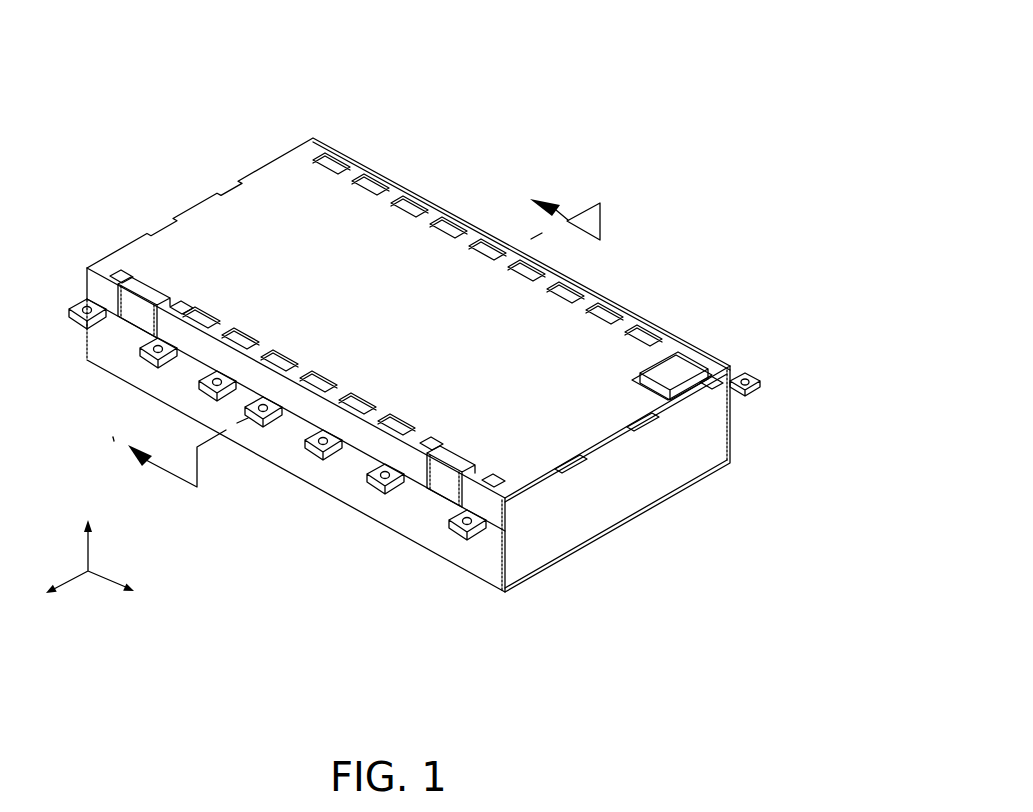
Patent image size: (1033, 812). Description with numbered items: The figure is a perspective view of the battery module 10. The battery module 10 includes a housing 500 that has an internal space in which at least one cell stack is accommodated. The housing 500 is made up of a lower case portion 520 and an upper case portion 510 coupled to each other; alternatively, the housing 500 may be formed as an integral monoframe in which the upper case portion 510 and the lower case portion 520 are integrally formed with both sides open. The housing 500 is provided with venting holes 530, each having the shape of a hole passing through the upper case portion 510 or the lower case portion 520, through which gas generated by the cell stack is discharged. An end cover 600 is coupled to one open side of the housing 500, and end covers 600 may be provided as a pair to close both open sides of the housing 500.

The battery module 10 is at (224, 82).
The housing 500 is at (628, 12).
The upper case portion 510 is at (408, 302).
The lower case portion 520 is at (397, 512).
The venting hole 530 is at (408, 207).
The end cover 600 is at (692, 463).